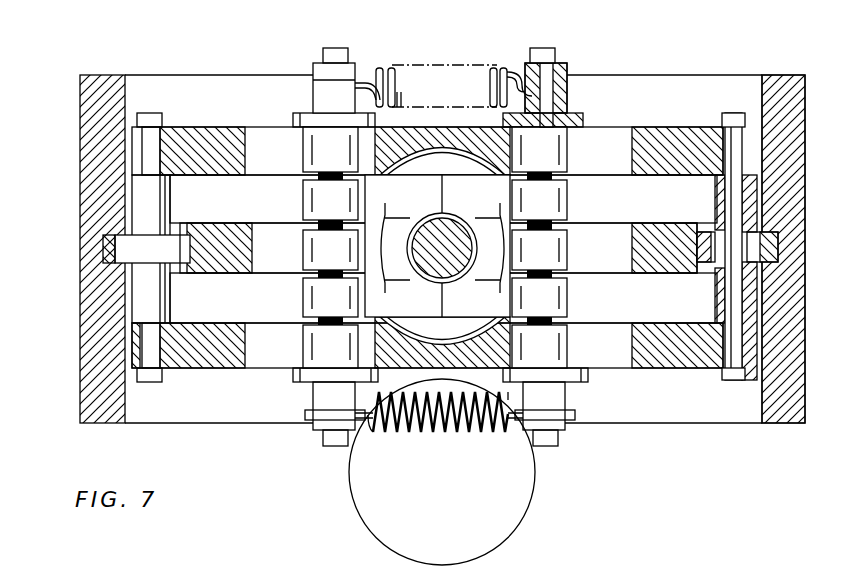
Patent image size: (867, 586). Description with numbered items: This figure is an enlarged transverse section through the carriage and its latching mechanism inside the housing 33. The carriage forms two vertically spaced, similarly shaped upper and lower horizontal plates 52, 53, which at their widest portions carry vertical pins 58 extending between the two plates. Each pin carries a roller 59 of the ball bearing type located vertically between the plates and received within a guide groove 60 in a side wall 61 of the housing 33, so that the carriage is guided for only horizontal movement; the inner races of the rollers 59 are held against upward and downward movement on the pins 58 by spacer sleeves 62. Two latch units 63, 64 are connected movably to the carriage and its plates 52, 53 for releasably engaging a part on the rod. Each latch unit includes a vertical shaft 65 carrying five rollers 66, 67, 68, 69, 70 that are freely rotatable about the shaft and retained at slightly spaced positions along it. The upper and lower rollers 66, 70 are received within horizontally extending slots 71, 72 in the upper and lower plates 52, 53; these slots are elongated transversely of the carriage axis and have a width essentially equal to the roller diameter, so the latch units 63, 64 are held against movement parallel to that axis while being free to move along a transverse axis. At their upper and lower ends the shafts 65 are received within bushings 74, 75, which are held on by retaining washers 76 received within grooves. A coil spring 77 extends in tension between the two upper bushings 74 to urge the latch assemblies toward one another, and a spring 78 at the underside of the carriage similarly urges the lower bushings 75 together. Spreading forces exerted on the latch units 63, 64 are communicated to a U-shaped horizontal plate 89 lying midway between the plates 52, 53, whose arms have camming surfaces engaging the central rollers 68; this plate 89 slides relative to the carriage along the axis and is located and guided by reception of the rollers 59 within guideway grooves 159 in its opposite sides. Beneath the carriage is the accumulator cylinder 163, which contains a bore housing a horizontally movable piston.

The housing 33 is at (808, 98).
The upper horizontal plate 52 is at (675, 142).
The lower horizontal plate 53 is at (700, 362).
The vertical pin 58 is at (735, 113).
The roller 59 is at (112, 240).
The guide groove 60 is at (112, 262).
The side wall 61 is at (80, 392).
The spacer sleeve 62 is at (716, 210).
The latch unit 63 is at (293, 108).
The latch unit 64 is at (577, 100).
The vertical shaft 65 is at (565, 95).
The upper roller 66 is at (578, 150).
The roller 67 is at (578, 200).
The central roller 68 is at (578, 250).
The roller 69 is at (578, 298).
The lower roller 70 is at (578, 345).
The slot 71 is at (632, 133).
The slot 72 is at (634, 362).
The bushing 74 is at (527, 72).
The bushing 75 is at (565, 430).
The retaining washer 76 is at (555, 70).
The coil spring 77 is at (386, 68).
The spring 78 is at (420, 432).
The U-shaped horizontal plate 89 is at (228, 225).
The guideway groove 159 is at (692, 235).
The accumulator cylinder 163 is at (442, 472).